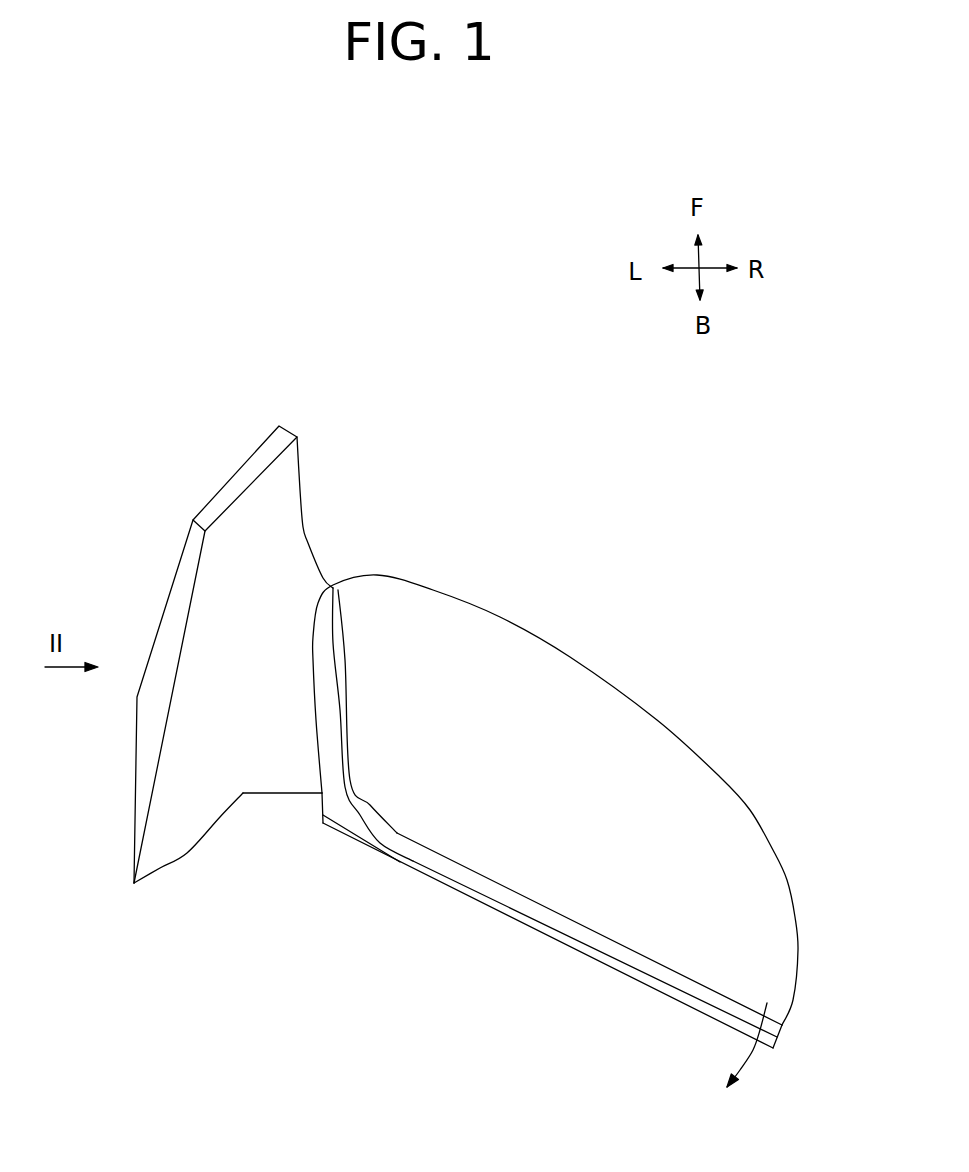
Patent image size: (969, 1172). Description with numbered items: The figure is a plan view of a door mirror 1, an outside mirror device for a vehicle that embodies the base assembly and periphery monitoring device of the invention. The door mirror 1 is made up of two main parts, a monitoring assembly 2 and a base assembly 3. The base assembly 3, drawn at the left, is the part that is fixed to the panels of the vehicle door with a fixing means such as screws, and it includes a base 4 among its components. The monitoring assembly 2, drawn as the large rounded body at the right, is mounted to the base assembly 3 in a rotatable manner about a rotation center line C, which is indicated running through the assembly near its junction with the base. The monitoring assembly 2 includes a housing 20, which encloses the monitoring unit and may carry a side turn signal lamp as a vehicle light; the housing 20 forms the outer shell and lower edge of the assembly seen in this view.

The door mirror 1 is at (437, 451).
The monitoring assembly 2 is at (588, 655).
The base assembly 3 is at (249, 437).
The base 4 is at (313, 533).
The housing 20 is at (653, 720).
The rotation center line C is at (403, 700).